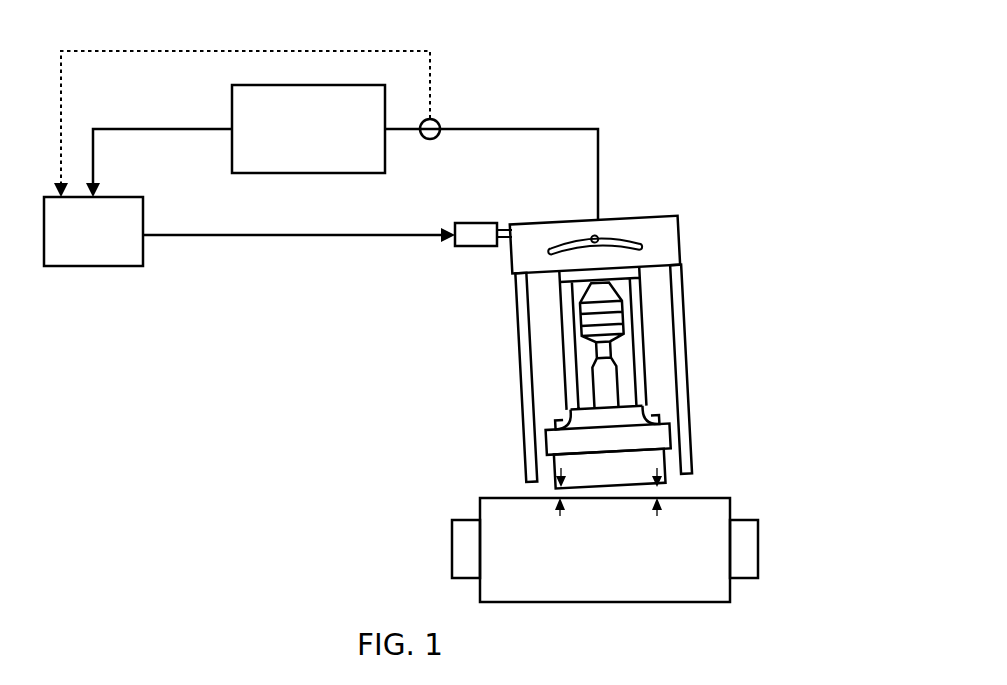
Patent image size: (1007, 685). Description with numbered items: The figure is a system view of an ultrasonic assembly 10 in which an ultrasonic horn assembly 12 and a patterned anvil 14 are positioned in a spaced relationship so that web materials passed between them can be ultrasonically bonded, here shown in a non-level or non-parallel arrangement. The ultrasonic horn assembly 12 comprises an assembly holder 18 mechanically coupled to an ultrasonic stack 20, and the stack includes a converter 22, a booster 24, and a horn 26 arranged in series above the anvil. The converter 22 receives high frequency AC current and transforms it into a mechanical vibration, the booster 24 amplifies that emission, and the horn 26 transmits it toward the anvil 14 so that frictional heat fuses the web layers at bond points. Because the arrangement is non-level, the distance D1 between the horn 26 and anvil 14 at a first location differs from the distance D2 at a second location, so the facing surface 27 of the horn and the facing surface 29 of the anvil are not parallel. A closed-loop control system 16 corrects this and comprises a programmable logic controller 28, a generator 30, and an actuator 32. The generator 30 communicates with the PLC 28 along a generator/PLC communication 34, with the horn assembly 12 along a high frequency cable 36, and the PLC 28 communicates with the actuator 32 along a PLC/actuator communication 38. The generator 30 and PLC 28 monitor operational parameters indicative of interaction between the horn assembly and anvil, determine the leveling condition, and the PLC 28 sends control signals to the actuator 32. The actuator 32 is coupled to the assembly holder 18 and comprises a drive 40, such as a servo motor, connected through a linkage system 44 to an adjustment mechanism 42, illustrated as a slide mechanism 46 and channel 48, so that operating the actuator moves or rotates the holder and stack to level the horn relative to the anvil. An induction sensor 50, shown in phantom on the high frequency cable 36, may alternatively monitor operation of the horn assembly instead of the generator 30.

The ultrasonic assembly 10 is at (712, 81).
The ultrasonic horn assembly 12 is at (733, 306).
The patterned anvil 14 is at (680, 603).
The closed-loop control system 16 is at (218, 306).
The assembly holder 18 is at (521, 397).
The ultrasonic stack 20 is at (551, 334).
The converter 22 is at (623, 322).
The booster 24 is at (613, 348).
The horn 26 is at (668, 451).
The facing surface of horn 27 is at (655, 487).
The programmable logic controller 28 is at (115, 266).
The facing surface of anvil 29 is at (520, 495).
The generator 30 is at (340, 173).
The actuator 32 is at (488, 256).
The generator/PLC communication 34 is at (137, 131).
The high frequency cable 36 is at (503, 130).
The PLC/actuator communication 38 is at (297, 236).
The drive 40 is at (478, 247).
The adjustment mechanism 42 is at (612, 193).
The linkage system 44 is at (508, 242).
The slide mechanism 46 is at (598, 236).
The channel 48 is at (645, 246).
The induction sensor 50 is at (433, 140).
The distance D1 is at (662, 511).
The distance D2 is at (557, 512).